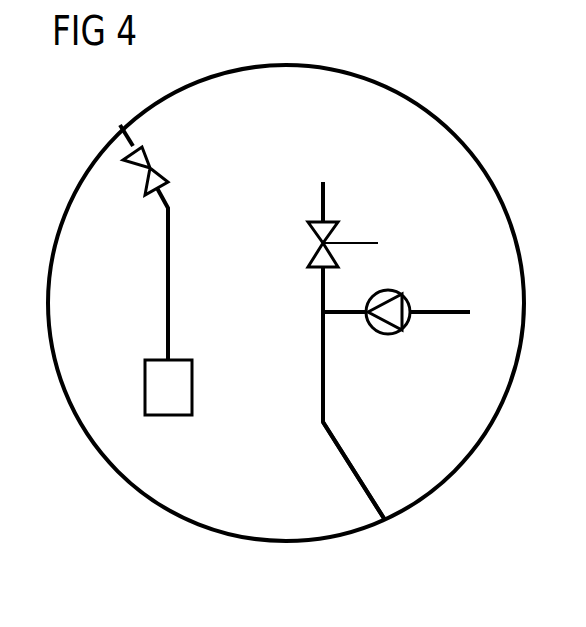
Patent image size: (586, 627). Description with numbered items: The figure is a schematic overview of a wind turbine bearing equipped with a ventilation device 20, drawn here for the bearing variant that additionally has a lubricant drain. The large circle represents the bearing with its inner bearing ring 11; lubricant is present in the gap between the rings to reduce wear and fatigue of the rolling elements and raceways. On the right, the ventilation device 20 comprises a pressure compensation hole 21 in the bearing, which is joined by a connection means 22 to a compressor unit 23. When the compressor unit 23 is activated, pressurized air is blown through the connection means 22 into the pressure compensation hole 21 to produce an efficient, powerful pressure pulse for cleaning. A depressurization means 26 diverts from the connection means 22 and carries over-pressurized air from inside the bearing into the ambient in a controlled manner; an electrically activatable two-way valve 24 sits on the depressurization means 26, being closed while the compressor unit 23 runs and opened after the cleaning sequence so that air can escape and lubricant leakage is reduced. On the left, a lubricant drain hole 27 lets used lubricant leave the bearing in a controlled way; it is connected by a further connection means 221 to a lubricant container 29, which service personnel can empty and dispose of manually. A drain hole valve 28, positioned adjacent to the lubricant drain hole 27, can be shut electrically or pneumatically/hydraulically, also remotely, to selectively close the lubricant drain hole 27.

The inner bearing ring 11 is at (433, 112).
The ventilation device 20 is at (280, 355).
The pressure compensation hole 21 is at (387, 522).
The connection means 22 is at (325, 380).
The compressor unit 23 is at (388, 290).
The two-way valve 24 is at (325, 222).
The depressurization means 26 is at (322, 283).
The lubricant drain hole 27 is at (118, 132).
The drain hole valve 28 is at (158, 170).
The lubricant container 29 is at (145, 390).
The further connection means 221 is at (170, 250).